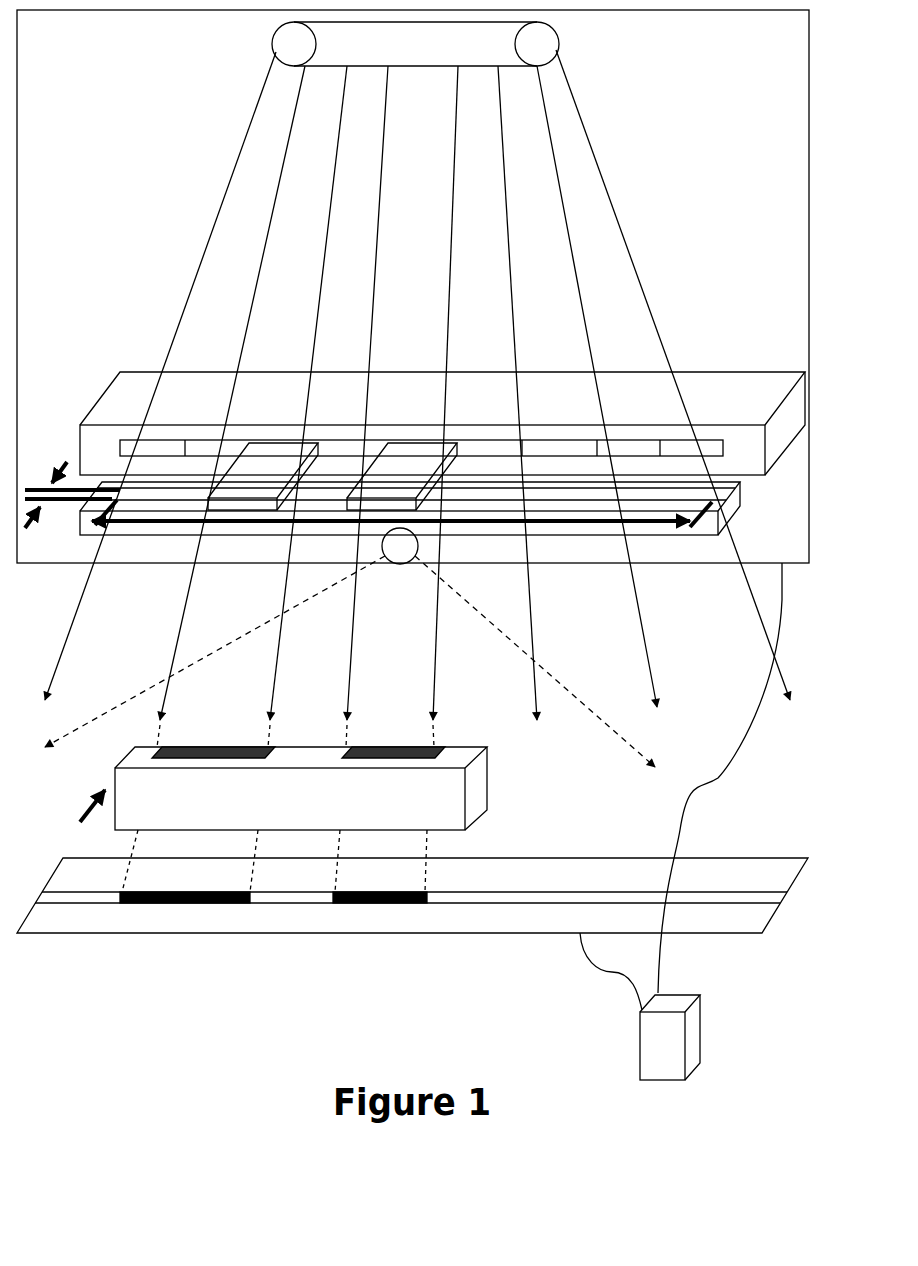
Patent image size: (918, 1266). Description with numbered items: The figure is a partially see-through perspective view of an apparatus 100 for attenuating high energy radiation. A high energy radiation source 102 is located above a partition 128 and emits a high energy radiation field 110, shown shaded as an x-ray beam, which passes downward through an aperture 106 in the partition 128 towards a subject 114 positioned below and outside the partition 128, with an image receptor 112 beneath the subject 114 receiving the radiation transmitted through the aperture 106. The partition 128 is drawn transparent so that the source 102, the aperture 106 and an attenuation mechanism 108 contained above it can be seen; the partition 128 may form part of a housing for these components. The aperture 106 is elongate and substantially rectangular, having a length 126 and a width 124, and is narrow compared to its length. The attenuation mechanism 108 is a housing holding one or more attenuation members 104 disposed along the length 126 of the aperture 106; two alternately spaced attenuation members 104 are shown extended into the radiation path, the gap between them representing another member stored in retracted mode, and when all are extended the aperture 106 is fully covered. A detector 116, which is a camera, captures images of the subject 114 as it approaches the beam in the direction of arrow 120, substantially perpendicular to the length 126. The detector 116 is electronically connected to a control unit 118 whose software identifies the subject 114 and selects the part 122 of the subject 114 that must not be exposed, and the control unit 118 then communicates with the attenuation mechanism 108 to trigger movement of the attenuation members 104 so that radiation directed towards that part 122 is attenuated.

The apparatus 100 is at (226, 1003).
The high energy radiation source 102 is at (545, 33).
The attenuation member 104 is at (403, 470).
The aperture 106 is at (712, 492).
The attenuation mechanism 108 is at (755, 395).
The high energy radiation field 110 is at (555, 160).
The image receptor 112 is at (100, 935).
The subject 114 is at (487, 780).
The detector 116 is at (393, 564).
The control unit 118 is at (670, 995).
The arrow 120 is at (97, 803).
The part of subject 122 is at (365, 747).
The width 124 is at (45, 488).
The length 126 is at (235, 527).
The partition 128 is at (57, 567).